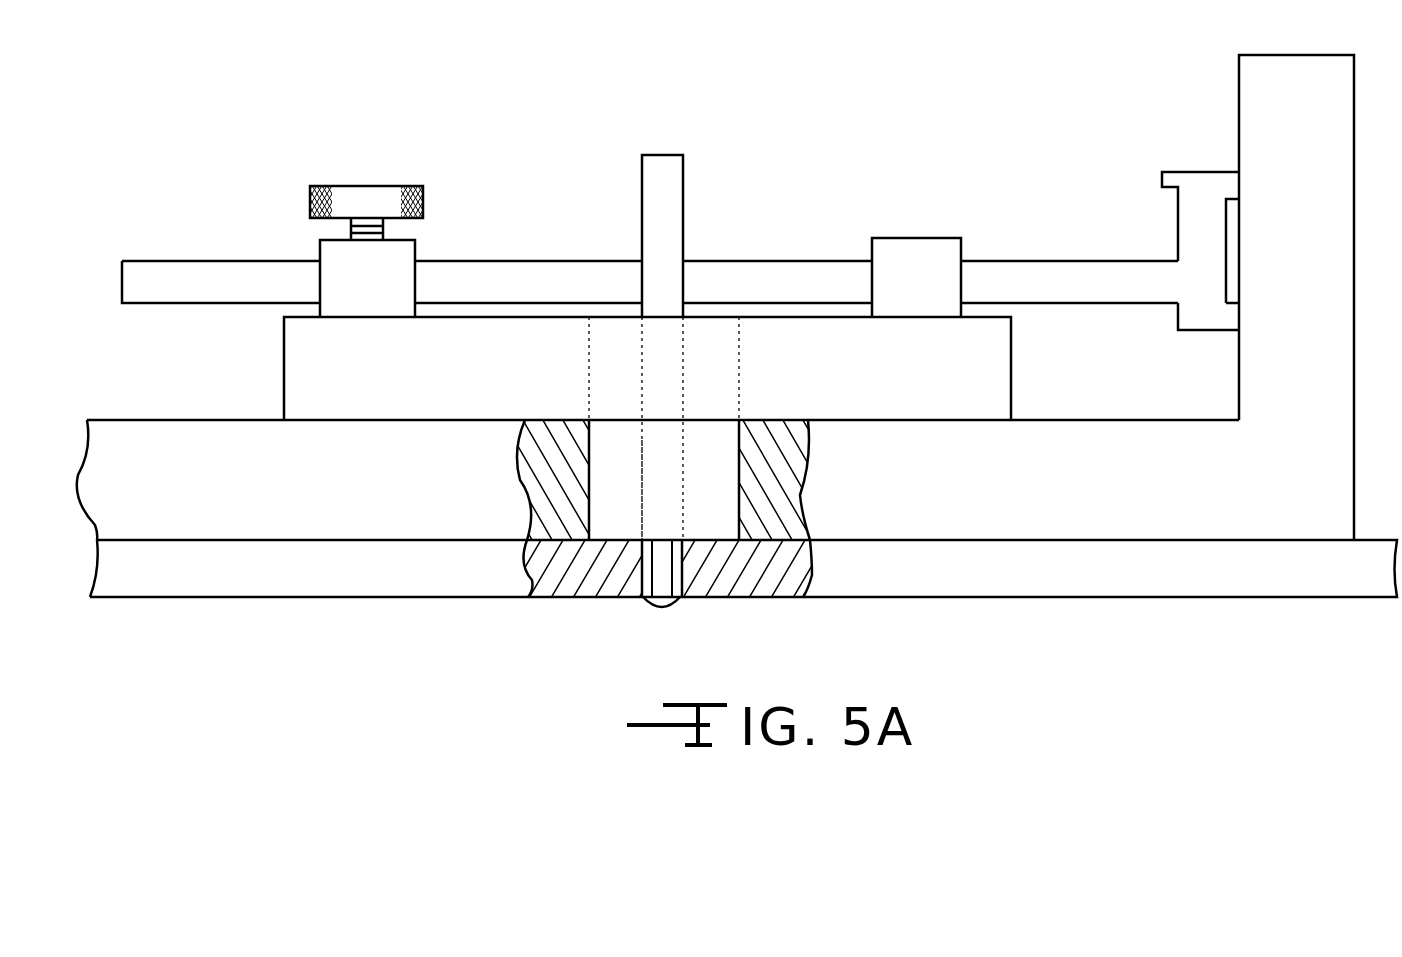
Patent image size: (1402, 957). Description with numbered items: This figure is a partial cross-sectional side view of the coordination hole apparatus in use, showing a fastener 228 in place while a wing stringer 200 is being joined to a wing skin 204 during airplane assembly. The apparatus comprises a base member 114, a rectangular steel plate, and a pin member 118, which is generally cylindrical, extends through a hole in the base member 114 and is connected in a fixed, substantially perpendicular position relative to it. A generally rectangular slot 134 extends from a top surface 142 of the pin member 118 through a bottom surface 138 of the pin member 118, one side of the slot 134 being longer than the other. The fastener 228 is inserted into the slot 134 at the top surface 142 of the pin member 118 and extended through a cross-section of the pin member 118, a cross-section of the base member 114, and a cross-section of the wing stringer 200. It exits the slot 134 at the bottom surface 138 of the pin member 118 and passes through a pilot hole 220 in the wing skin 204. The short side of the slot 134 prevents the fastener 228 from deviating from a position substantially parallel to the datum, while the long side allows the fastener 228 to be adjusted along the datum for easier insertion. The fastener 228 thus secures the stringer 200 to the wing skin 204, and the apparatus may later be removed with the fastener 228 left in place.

The fastener 228 is at (683, 165).
The base member 114 is at (517, 362).
The top surface 142 is at (709, 316).
The pin member 118 is at (707, 495).
The wing stringer 200 is at (943, 492).
The wing skin 204 is at (370, 572).
The bottom surface 138 is at (708, 540).
The pilot hole 220 is at (637, 577).
The generally rectangular slot 134 is at (642, 470).